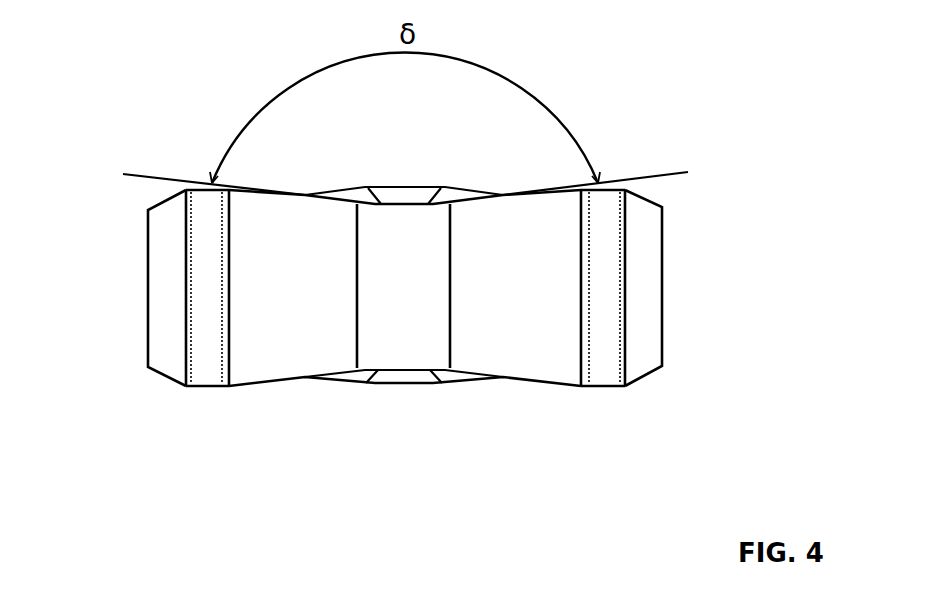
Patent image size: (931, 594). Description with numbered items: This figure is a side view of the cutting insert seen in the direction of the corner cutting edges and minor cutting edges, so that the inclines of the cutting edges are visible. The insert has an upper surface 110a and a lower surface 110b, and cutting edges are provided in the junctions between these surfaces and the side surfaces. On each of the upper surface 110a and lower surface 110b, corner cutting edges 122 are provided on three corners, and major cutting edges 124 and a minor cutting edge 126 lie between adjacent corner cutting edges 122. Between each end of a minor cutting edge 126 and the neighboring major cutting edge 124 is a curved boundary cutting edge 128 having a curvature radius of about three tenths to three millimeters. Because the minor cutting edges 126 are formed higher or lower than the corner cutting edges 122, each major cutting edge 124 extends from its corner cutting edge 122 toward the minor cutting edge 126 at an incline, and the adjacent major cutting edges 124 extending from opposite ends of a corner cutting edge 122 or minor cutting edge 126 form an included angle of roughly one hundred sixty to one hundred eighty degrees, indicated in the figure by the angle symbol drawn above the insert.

The upper surface 110a is at (442, 200).
The lower surface 110b is at (440, 372).
The corner cutting edge 122 is at (403, 203).
The major cutting edge 124 is at (165, 372).
The minor cutting edge 126 is at (192, 388).
The boundary cutting edge 128 is at (187, 388).